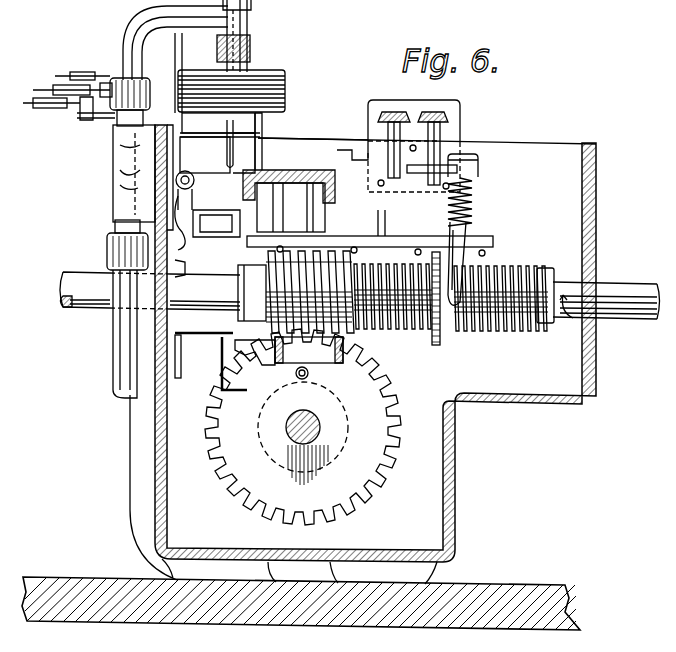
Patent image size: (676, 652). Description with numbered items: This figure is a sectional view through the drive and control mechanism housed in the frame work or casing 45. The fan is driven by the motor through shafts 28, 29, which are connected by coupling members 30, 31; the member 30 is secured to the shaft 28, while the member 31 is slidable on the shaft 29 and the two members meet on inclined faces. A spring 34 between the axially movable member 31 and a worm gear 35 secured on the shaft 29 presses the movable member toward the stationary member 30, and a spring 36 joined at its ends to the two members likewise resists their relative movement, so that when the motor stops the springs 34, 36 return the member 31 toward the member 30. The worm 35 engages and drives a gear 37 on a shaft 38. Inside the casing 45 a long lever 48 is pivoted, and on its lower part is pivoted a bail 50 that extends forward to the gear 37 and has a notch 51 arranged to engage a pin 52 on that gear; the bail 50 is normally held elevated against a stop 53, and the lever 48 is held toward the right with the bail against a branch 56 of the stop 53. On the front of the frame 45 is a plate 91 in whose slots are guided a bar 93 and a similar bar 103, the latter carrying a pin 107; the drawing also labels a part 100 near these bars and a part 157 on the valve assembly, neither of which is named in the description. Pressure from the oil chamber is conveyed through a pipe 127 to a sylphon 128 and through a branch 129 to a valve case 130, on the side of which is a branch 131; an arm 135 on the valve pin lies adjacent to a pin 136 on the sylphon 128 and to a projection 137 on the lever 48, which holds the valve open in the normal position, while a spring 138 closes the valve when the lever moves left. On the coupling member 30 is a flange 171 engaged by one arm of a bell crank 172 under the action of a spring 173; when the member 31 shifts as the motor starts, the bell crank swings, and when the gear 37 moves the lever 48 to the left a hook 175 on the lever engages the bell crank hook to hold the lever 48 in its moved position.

The shaft 28 is at (632, 292).
The shaft 29 is at (85, 282).
The coupling member 30 is at (572, 280).
The coupling member 31 is at (440, 333).
The spring 34 is at (385, 342).
The worm gear 35 is at (266, 254).
The spring 36 is at (505, 335).
The gear 37 is at (372, 486).
The shaft 38 is at (298, 432).
The frame work or casing 45 is at (455, 462).
The long lever 48 is at (334, 205).
The bail 50 is at (312, 373).
The notch 51 is at (270, 360).
The pin 52 is at (290, 386).
The stop 53 is at (218, 336).
The branch 56 is at (218, 392).
The plate 91 is at (460, 131).
The bar 93 is at (432, 112).
The clip 100 is at (462, 147).
The bar 103 is at (396, 112).
The pin 107 is at (368, 131).
The pipe 127 is at (249, 21).
The sylphon 128 is at (272, 72).
The branch 129 is at (123, 52).
The valve case 130 is at (113, 160).
The branch 131 is at (205, 154).
The arm 135 is at (220, 146).
The pin 136 is at (262, 140).
The projection 137 is at (213, 230).
The spring 138 is at (180, 276).
The screw 157 is at (176, 182).
The flange 171 is at (437, 346).
The bell crank 172 is at (452, 252).
The spring 173 is at (478, 192).
The hook 175 is at (338, 151).